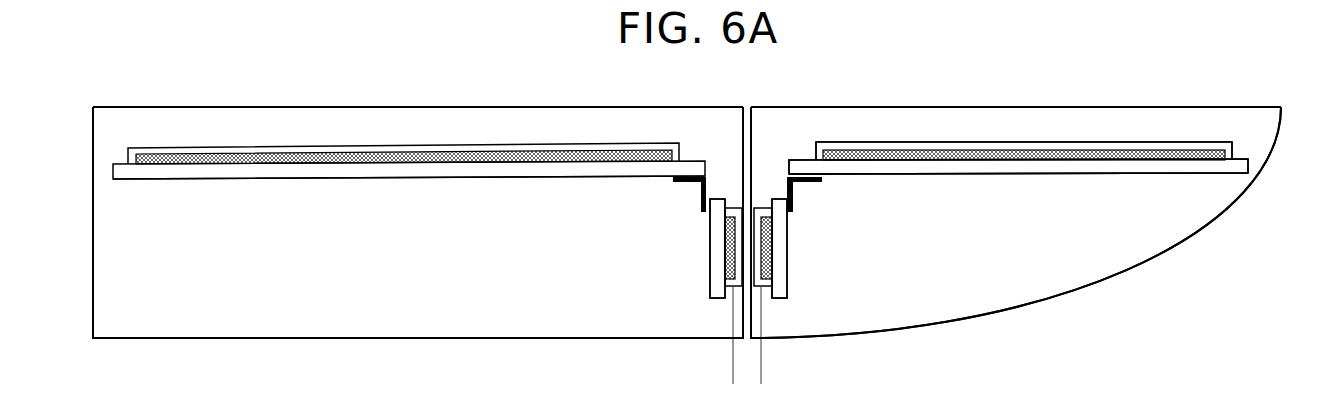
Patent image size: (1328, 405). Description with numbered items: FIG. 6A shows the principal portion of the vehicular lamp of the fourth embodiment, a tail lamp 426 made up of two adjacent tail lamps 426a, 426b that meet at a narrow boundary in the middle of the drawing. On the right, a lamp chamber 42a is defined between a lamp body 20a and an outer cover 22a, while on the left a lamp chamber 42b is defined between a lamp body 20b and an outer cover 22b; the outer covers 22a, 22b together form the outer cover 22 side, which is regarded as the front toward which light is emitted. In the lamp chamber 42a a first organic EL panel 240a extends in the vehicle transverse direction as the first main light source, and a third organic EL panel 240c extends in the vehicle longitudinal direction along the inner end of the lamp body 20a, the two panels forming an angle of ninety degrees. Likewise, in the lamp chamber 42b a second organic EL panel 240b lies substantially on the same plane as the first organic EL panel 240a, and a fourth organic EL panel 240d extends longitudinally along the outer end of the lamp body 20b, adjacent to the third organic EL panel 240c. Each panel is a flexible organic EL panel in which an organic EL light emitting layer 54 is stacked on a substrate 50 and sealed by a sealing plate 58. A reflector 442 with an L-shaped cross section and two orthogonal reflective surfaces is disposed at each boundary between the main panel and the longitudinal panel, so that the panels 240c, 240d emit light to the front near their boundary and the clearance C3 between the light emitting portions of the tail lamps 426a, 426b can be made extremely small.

The tail lamp 426 is at (701, 205).
The tail lamp 426a is at (1138, 88).
The tail lamp 426b is at (345, 98).
The lamp body 20a is at (955, 107).
The lamp body 20b is at (543, 107).
The outer cover 22 is at (687, 222).
The outer cover 22a is at (1158, 250).
The outer cover 22b is at (222, 338).
The lamp chamber 42a is at (1020, 137).
The lamp chamber 42b is at (373, 138).
The substrate 50 is at (497, 172).
The organic EL light emitting layer 54 is at (465, 164).
The sealing plate 58 is at (430, 150).
The first organic EL panel 240a is at (937, 175).
The second organic EL panel 240b is at (548, 177).
The third organic EL panel 240c is at (775, 199).
The fourth organic EL panel 240d is at (714, 199).
The reflector 442 is at (690, 185).
The clearance C3 is at (795, 379).